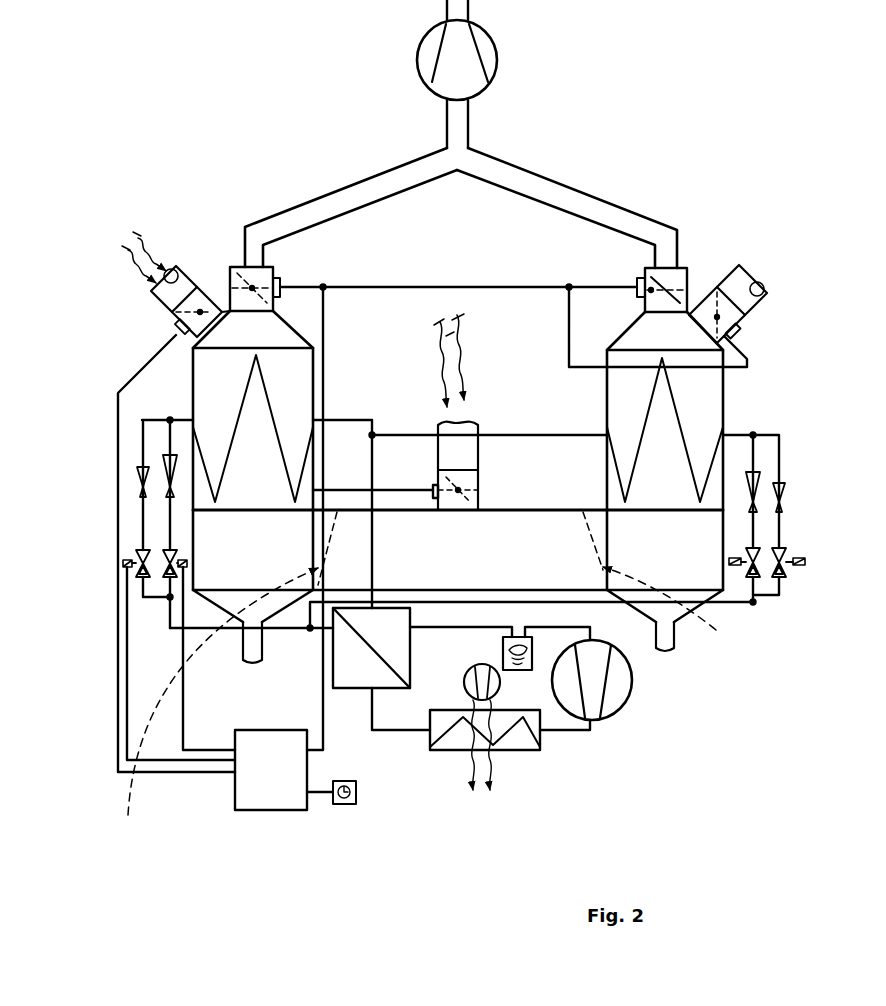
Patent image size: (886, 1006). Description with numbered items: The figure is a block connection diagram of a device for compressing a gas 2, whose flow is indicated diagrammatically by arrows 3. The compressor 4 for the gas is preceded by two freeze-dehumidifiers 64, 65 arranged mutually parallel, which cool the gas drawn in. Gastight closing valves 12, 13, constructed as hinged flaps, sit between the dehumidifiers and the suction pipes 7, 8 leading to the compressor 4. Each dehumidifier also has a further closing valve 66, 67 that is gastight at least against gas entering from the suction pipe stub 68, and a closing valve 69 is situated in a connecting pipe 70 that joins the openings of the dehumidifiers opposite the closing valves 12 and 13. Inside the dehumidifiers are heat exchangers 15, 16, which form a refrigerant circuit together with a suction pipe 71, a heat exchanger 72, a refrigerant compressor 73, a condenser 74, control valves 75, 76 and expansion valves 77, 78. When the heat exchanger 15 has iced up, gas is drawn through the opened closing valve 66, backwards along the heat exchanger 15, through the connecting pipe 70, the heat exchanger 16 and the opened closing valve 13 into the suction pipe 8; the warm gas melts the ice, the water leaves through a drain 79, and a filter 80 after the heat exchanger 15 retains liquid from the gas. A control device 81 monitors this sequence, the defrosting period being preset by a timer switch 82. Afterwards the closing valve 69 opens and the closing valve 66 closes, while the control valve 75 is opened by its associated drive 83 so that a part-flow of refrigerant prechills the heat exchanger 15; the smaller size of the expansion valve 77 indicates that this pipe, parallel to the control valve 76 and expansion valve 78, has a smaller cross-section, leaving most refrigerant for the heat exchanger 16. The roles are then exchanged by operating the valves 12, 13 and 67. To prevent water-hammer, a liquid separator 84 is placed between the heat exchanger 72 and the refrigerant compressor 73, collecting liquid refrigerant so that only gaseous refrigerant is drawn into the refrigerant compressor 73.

The gas 2 is at (140, 232).
The arrows 3 is at (158, 262).
The compressor 4 is at (490, 52).
The suction pipe 7 is at (353, 182).
The suction pipe 8 is at (552, 178).
The closing valve 12 is at (232, 262).
The closing valve 13 is at (687, 256).
The heat exchanger 15 is at (236, 416).
The heat exchanger 16 is at (680, 415).
The freeze-dehumidifier 64 is at (284, 308).
The freeze-dehumidifier 65 is at (603, 332).
The closing valve 66 is at (160, 305).
The closing valve 67 is at (725, 268).
The suction pipe stub 68 is at (178, 283).
The closing valve 69 is at (490, 483).
The connecting pipe 70 is at (595, 605).
The suction pipe 71 is at (375, 458).
The heat exchanger 72 is at (352, 670).
The refrigerant compressor 73 is at (613, 700).
The condenser 74 is at (520, 738).
The control valve 75 is at (143, 578).
The control valve 76 is at (168, 578).
The expansion valve 77 is at (137, 473).
The expansion valve 78 is at (162, 458).
The drain 79 is at (246, 645).
The filter 80 is at (428, 707).
The control device 81 is at (262, 817).
The timer switch 82 is at (360, 800).
The drive 83 is at (127, 568).
The liquid separator 84 is at (527, 672).